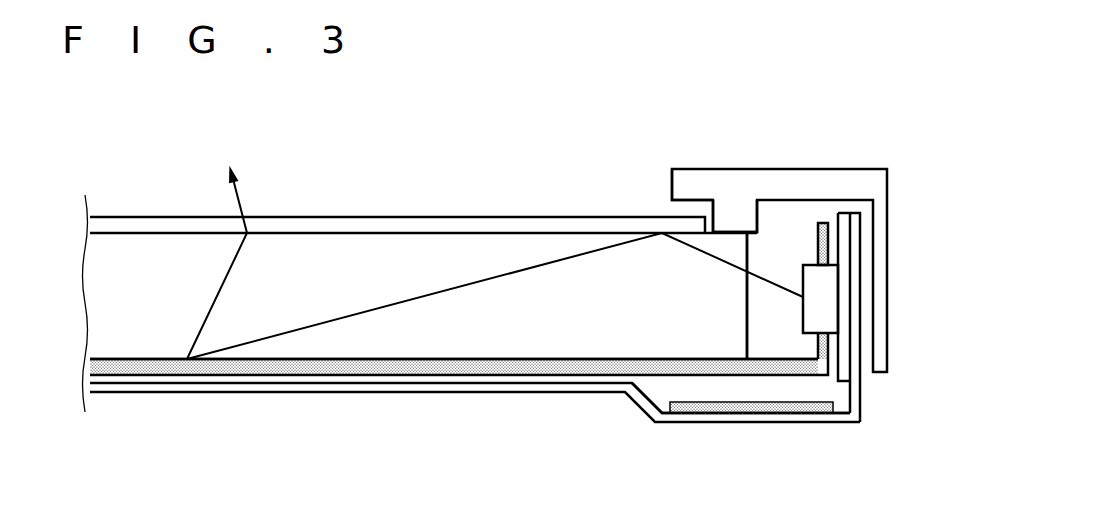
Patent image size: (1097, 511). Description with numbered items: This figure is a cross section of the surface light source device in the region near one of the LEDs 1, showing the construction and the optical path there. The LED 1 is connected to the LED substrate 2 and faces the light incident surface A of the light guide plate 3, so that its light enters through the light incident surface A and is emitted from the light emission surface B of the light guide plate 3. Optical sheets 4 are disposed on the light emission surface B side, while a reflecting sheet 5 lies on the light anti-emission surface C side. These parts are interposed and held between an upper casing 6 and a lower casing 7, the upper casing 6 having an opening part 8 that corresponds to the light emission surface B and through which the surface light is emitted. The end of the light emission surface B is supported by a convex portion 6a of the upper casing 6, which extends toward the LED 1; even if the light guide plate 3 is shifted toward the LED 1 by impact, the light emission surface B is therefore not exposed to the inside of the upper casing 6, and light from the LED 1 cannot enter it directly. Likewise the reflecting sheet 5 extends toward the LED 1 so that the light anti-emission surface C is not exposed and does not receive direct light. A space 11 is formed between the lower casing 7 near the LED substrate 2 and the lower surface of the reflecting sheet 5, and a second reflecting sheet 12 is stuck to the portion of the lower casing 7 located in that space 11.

The light emitting diode 1 is at (827, 297).
The LED substrate 2 is at (847, 373).
The light guide plate 3 is at (512, 255).
The optical sheets 4 is at (340, 227).
The reflecting sheet 5 is at (280, 365).
The upper casing 6 is at (795, 183).
The convex portion 6a is at (733, 215).
The lower casing 7 is at (463, 390).
The opening part 8 is at (672, 187).
The space 11 is at (667, 387).
The second reflecting sheet 12 is at (772, 412).
The light incident surface A is at (747, 242).
The light emission surface B is at (435, 232).
The light anti-emission surface C is at (385, 360).